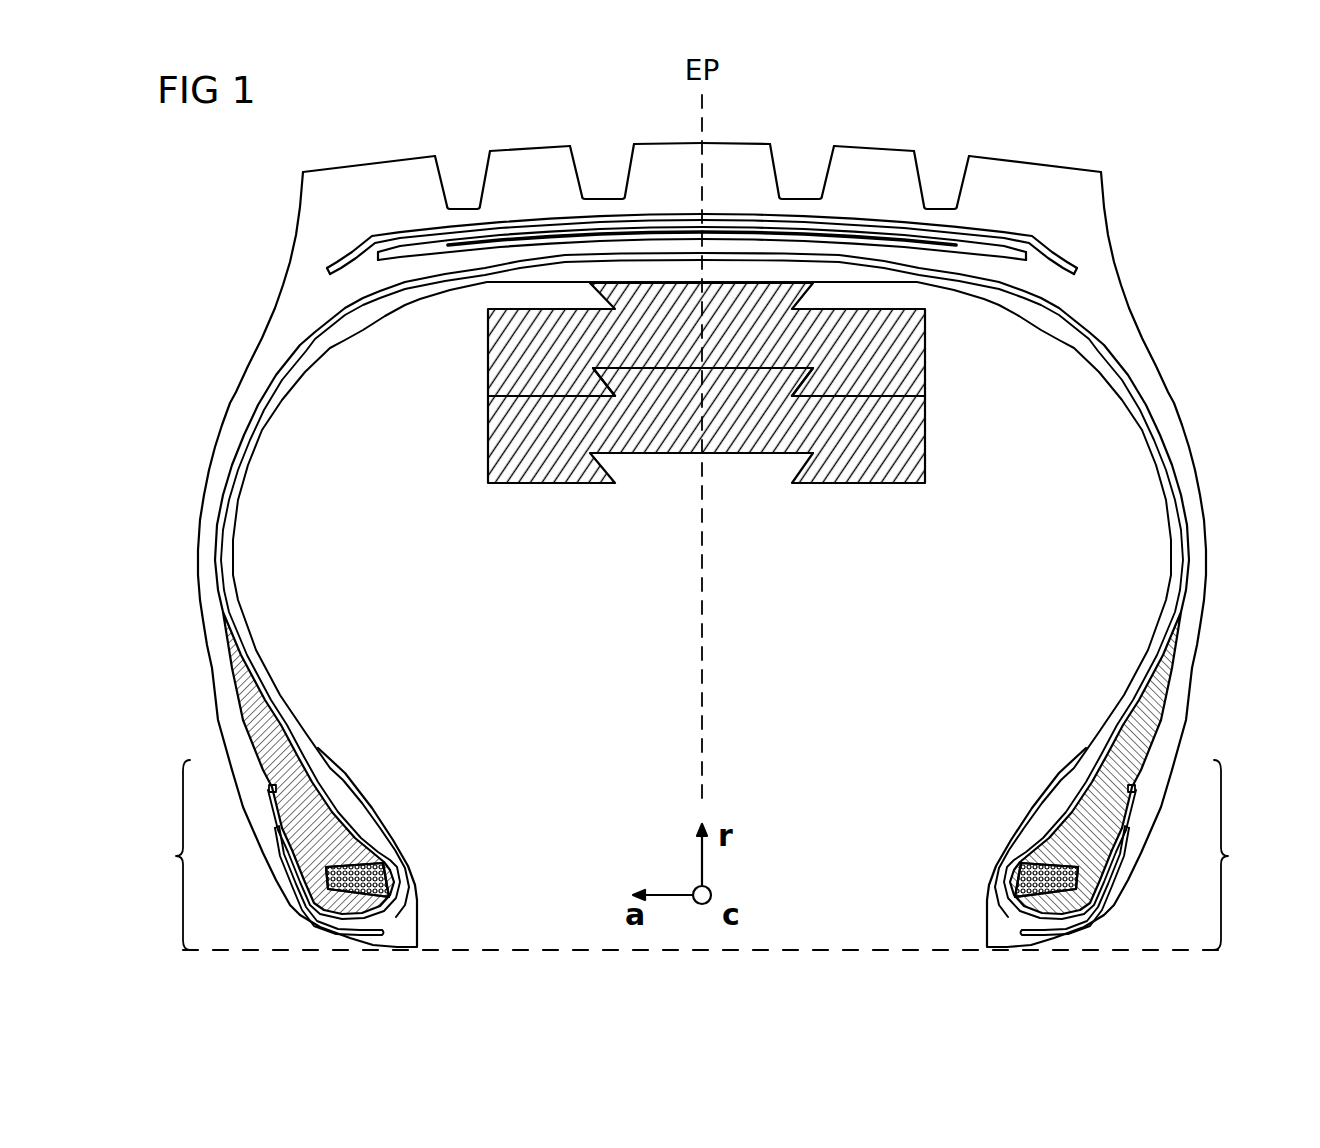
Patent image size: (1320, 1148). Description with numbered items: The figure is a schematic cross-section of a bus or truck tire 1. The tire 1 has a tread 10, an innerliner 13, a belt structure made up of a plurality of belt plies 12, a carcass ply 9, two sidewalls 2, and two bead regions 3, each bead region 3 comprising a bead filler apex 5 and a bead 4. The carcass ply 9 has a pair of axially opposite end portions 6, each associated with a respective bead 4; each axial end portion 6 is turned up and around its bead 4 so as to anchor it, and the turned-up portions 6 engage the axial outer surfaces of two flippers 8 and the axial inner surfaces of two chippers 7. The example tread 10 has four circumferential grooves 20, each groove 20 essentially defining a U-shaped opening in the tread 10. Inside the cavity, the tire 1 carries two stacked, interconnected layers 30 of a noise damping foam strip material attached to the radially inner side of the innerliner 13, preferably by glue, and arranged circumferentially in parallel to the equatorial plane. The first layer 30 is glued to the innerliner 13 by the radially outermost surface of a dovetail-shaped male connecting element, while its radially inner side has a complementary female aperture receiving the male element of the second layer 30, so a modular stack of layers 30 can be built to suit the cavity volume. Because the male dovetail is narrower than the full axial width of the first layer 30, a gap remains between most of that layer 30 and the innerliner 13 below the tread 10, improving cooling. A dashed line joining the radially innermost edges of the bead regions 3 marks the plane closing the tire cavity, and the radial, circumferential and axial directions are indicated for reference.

The tire 1 is at (240, 236).
The sidewall 2 is at (230, 400).
The bead region 3 is at (703, 849).
The bead 4 is at (388, 880).
The bead filler apex 5 is at (311, 773).
The axial end portion of the carcass ply 6 is at (268, 789).
The chipper 7 is at (277, 828).
The flipper 8 is at (302, 877).
The carcass ply 9 is at (290, 367).
The tread 10 is at (1086, 197).
The belt plies 12 is at (632, 214).
The innerliner 13 is at (333, 345).
The circumferential groove 20 is at (458, 148).
The interconnected layer of noise damping foam strip material 30 is at (488, 372).